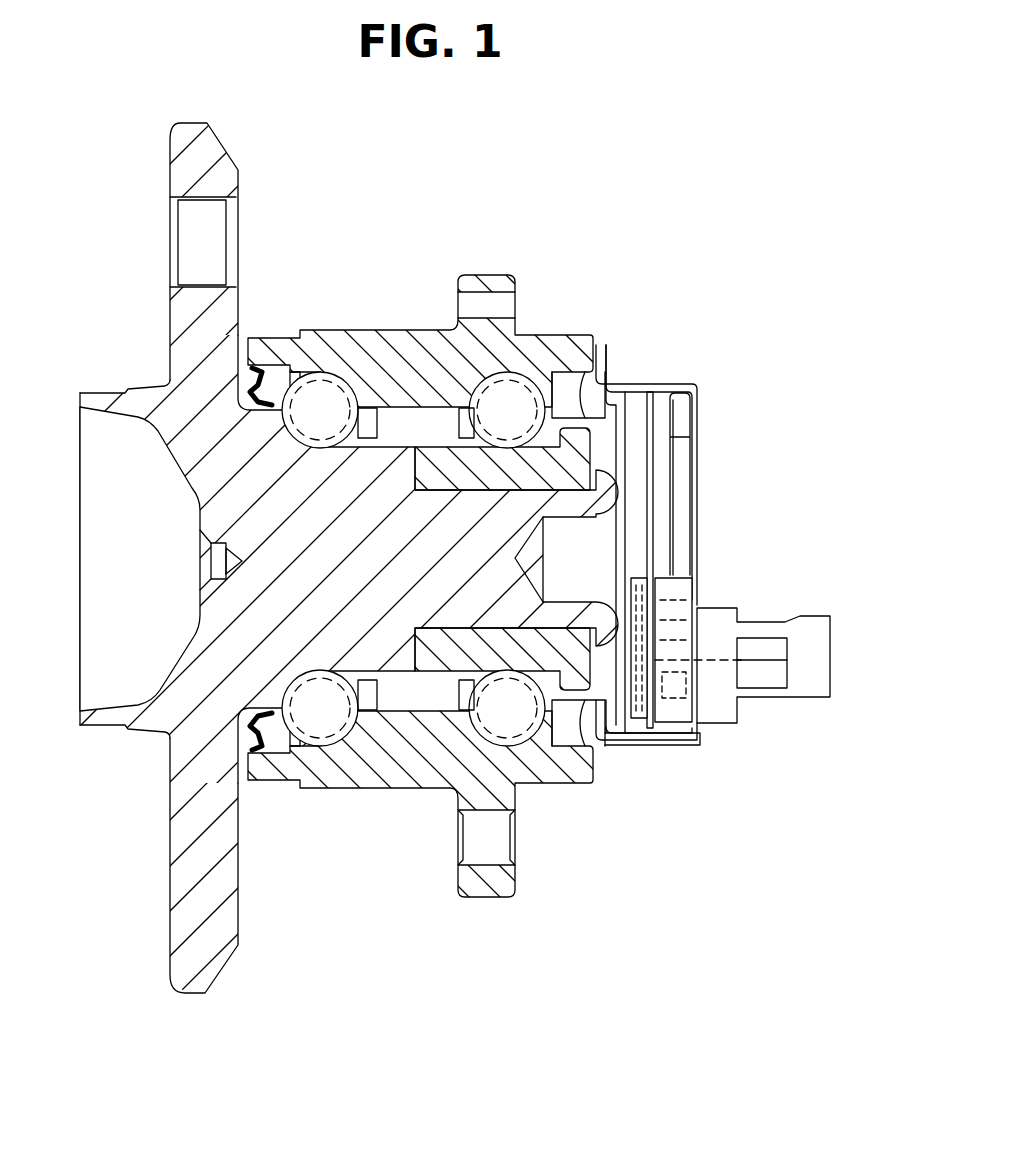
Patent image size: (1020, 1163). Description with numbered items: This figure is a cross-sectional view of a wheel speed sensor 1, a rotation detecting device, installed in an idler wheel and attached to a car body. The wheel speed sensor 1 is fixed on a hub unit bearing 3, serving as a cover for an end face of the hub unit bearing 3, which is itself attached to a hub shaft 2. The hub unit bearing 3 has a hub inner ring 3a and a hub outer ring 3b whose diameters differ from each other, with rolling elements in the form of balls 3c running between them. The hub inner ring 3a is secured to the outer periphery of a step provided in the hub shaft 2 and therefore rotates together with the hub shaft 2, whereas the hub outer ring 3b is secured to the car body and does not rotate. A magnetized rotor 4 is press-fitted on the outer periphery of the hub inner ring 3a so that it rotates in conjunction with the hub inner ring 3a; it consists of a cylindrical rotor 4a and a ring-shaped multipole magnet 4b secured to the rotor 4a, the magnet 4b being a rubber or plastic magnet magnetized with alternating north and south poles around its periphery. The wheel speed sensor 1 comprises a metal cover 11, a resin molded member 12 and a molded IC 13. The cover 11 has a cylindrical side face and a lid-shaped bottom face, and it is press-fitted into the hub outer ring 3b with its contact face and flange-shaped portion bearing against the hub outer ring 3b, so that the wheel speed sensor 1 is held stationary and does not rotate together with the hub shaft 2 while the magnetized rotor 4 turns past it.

The wheel speed sensor 1 is at (664, 374).
The hub shaft 2 is at (455, 622).
The hub unit bearing 3 is at (487, 266).
The hub inner ring 3a is at (562, 448).
The hub outer ring 3b is at (385, 345).
The rolling elements (balls) 3c is at (333, 376).
The magnetized rotor 4 is at (703, 192).
The cylindrical rotor 4a is at (620, 392).
The multipole magnet 4b is at (650, 392).
The cover 11 is at (693, 388).
The resin molded member 12 is at (704, 608).
The molded IC 13 is at (692, 744).